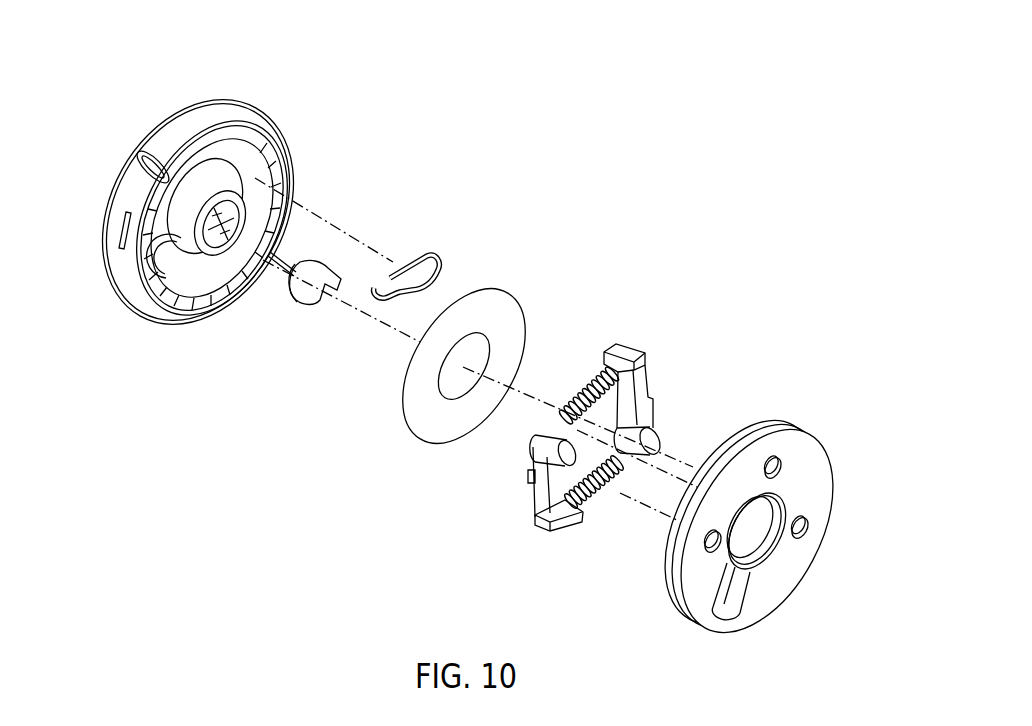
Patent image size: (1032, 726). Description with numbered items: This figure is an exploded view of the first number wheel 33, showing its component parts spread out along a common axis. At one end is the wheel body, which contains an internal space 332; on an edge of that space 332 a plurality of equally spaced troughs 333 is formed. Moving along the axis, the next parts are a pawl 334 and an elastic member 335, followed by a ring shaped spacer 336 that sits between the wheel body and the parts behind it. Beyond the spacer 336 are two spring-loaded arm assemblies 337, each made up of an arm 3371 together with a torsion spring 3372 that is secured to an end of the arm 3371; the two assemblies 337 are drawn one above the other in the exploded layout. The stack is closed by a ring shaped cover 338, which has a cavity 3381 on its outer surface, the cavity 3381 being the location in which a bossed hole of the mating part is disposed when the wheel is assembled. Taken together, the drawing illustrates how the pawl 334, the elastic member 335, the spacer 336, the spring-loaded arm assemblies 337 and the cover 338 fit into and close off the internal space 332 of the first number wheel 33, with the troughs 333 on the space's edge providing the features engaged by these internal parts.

The first number wheel 33 is at (303, 110).
The internal space 332 is at (210, 156).
The troughs 333 is at (263, 199).
The pawl 334 is at (302, 294).
The elastic member 335 is at (437, 258).
The ring shaped spacer 336 is at (502, 313).
The spring-loaded arm assemblies 337 is at (677, 336).
The arm 3371 is at (640, 413).
The torsion spring 3372 is at (598, 358).
The ring shaped cover 338 is at (802, 465).
The cavity 3381 is at (738, 598).